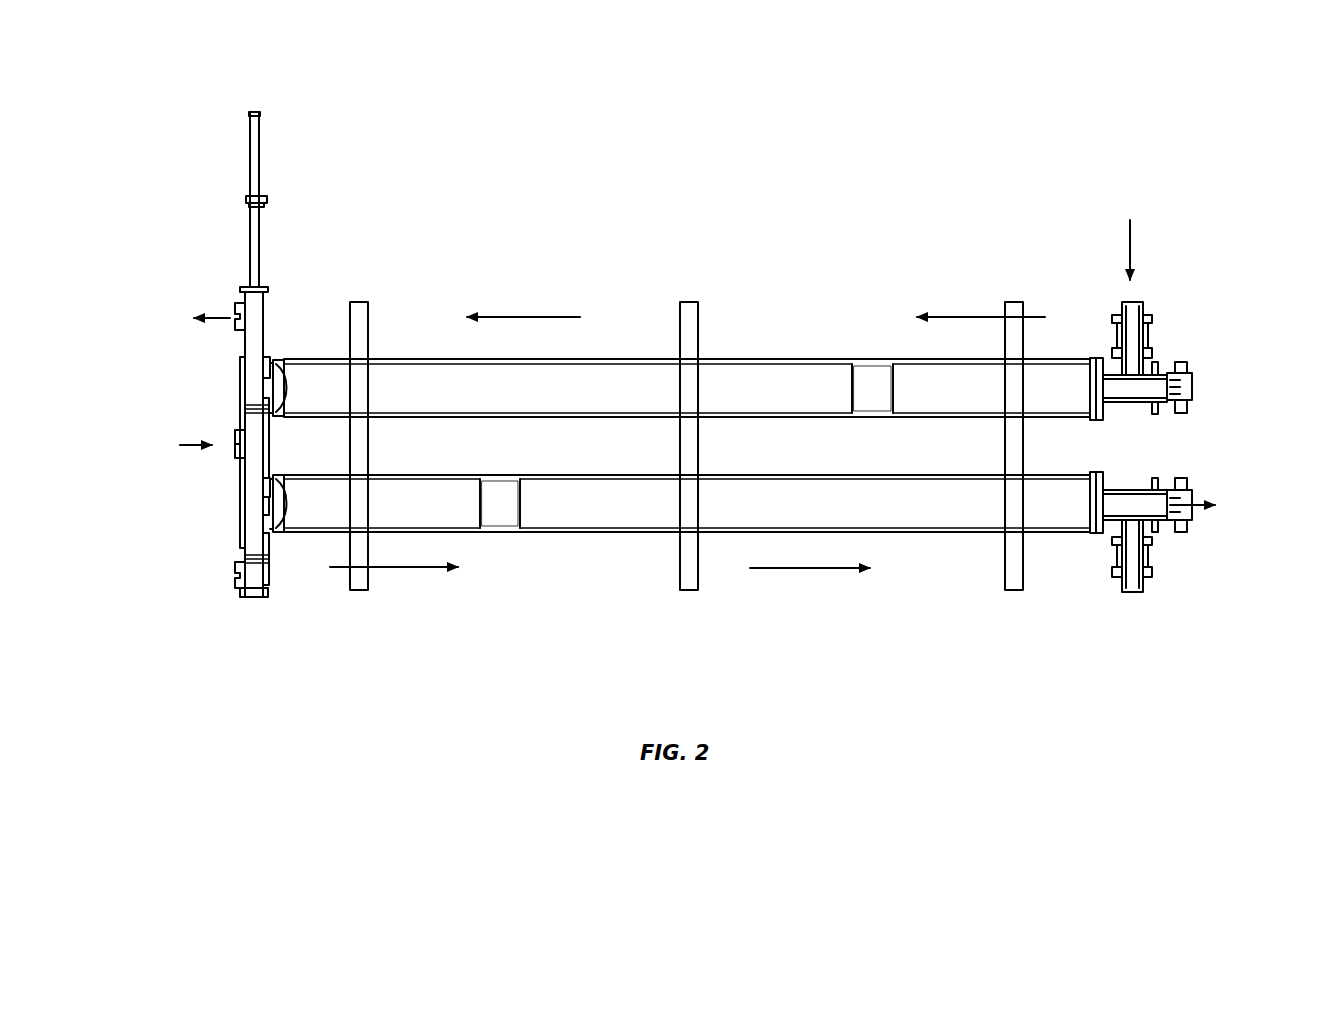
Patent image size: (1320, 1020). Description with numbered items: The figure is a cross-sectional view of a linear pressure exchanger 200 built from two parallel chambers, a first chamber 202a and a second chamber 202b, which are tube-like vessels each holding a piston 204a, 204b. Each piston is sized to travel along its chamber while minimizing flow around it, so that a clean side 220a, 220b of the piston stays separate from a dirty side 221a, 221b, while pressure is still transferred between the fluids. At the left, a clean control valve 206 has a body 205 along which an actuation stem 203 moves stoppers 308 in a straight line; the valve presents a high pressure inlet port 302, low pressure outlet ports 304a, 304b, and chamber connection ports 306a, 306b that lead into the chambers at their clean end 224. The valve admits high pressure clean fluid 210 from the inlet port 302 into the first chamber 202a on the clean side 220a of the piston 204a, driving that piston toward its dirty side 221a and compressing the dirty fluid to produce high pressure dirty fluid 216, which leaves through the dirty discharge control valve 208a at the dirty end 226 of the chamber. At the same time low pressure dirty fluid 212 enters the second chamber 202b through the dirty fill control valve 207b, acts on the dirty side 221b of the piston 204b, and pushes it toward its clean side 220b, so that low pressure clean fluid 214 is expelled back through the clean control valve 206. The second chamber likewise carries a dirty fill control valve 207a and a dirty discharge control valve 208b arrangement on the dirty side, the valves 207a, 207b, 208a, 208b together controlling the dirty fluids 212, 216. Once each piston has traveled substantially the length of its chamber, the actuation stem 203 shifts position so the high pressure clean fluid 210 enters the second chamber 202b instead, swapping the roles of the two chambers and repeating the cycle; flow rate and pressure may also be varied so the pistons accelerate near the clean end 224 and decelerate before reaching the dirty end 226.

The linear pressure exchanger 200 is at (1024, 196).
The actuation stem 203 is at (252, 218).
The low pressure outlet port 304b is at (240, 316).
The low pressure outlet port 304a is at (240, 572).
The chamber connection port 306b is at (287, 378).
The chamber connection port 306a is at (282, 508).
The low pressure clean fluid 214 is at (403, 383).
The second chamber 202b is at (626, 358).
The clean side of piston 220b is at (852, 366).
The piston 204b is at (873, 376).
The dirty side of piston 221b is at (896, 388).
The low pressure dirty fluid 212 is at (976, 388).
The dirty fill control valve 207b is at (1136, 338).
The dirty discharge control valve 208b is at (1185, 385).
The valve body 205 is at (245, 380).
The stopper 308 is at (247, 404).
The clean control valve 206 is at (243, 432).
The high pressure inlet port 302 is at (240, 448).
The high pressure clean fluid 210 is at (405, 516).
The clean side of piston 220a is at (480, 517).
The piston 204a is at (502, 514).
The dirty side of piston 221a is at (520, 505).
The first chamber 202a is at (656, 534).
The high pressure dirty fluid 216 is at (820, 506).
The dirty end of chamber 226 is at (1095, 388).
The dirty fill control valve 207a is at (1133, 582).
The dirty discharge control valve 208a is at (1183, 530).
The clean end of chamber 224 is at (293, 414).